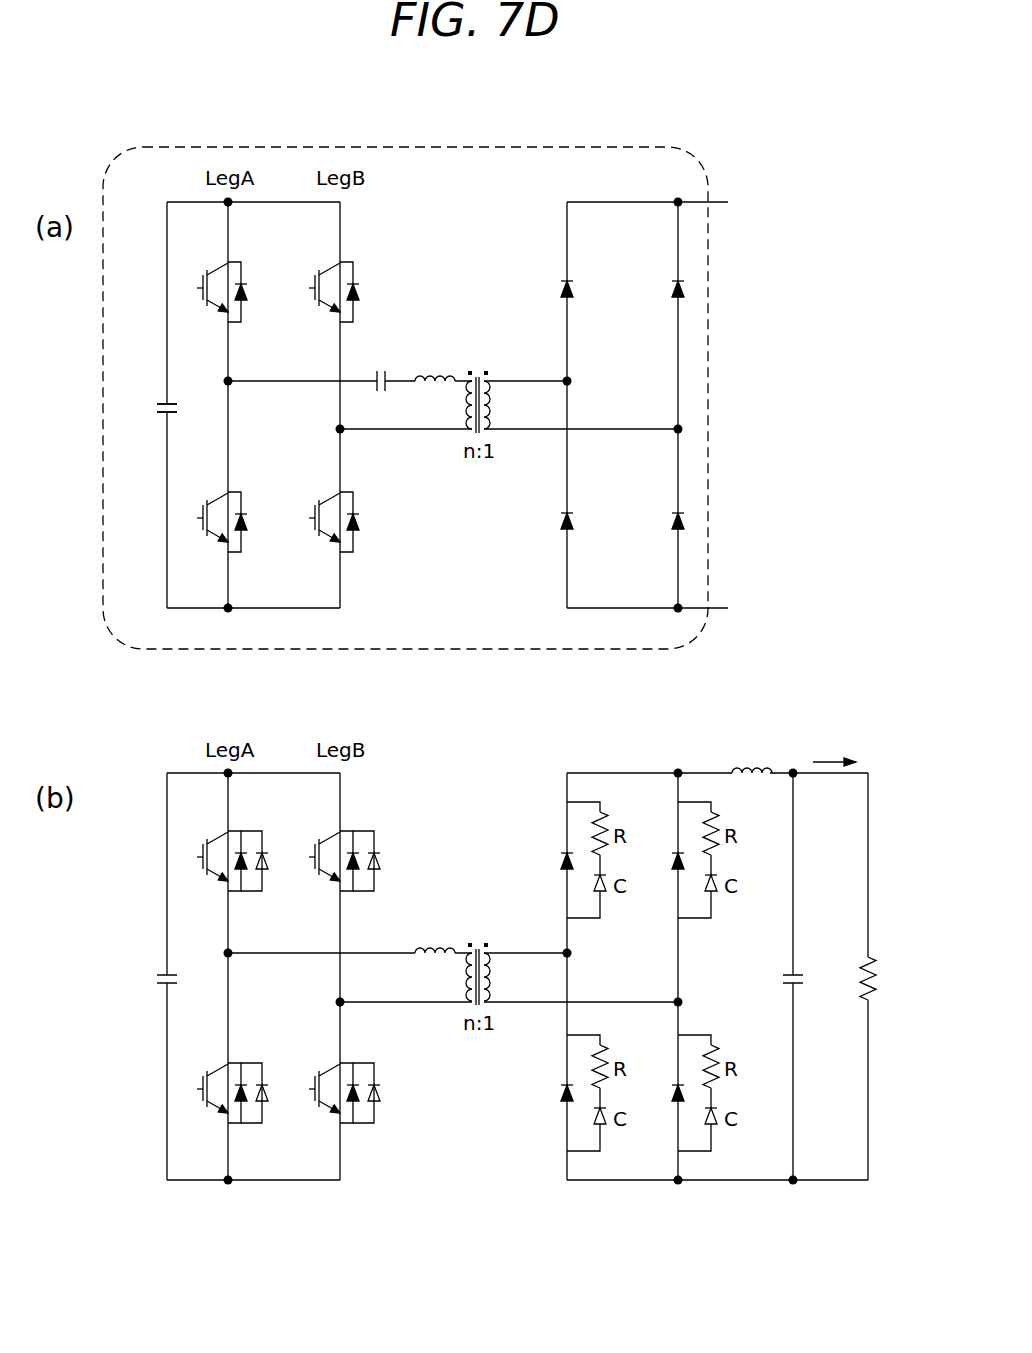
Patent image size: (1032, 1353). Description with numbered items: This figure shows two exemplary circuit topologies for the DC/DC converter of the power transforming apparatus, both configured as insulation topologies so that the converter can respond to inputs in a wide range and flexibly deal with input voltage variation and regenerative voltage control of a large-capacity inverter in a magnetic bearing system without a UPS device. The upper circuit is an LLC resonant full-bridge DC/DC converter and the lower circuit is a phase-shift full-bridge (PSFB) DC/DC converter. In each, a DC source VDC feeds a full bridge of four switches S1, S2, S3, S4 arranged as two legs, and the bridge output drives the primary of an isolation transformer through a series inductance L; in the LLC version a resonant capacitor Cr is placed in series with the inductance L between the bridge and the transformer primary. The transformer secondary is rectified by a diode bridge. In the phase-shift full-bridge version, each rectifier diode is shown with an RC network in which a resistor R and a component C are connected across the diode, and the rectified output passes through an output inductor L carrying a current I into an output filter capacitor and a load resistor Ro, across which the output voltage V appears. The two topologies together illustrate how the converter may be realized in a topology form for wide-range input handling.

The switch S1 (IGBT) S1 is at (232, 589).
The switch S2 (IGBT) S2 is at (344, 589).
The switch S3 (IGBT) S3 is at (232, 821).
The switch S4 (IGBT) S4 is at (344, 821).
The resonant capacitor Cr is at (380, 365).
The inductor L is at (593, 647).
The DC voltage source VDC is at (147, 698).
The snubber resistor R is at (652, 976).
The snubber diode/capacitor C is at (652, 976).
The load resistor Ro is at (851, 978).
The output voltage V is at (899, 980).
The output current I is at (834, 751).